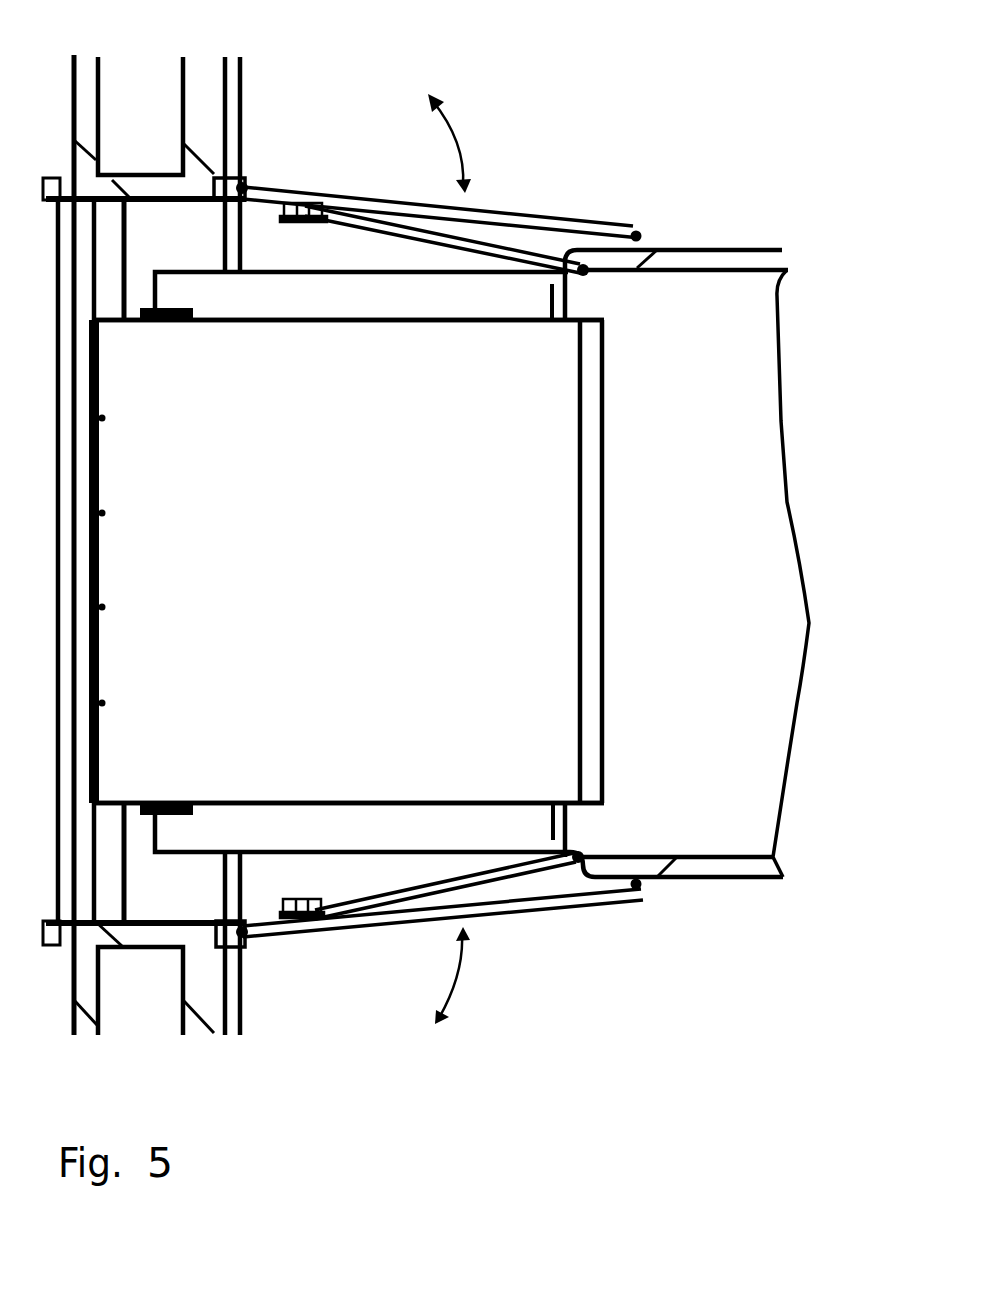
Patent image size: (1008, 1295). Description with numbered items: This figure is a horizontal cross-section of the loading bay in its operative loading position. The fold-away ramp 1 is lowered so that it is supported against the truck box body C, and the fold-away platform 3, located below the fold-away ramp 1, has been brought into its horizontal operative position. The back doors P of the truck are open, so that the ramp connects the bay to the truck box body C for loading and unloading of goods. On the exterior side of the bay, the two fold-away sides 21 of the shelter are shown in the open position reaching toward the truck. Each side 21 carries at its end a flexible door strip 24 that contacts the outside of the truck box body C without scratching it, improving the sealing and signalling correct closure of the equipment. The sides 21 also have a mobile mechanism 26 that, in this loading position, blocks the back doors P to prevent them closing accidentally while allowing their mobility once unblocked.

The fold-away ramp 1 is at (345, 732).
The fold-away platform 3 is at (493, 817).
The fold-away sides of the shelter 21 is at (403, 200).
The flexible door strip 24 is at (637, 888).
The mobile mechanism 26 is at (298, 197).
The back doors of the truck P is at (480, 243).
The truck box body C is at (705, 335).